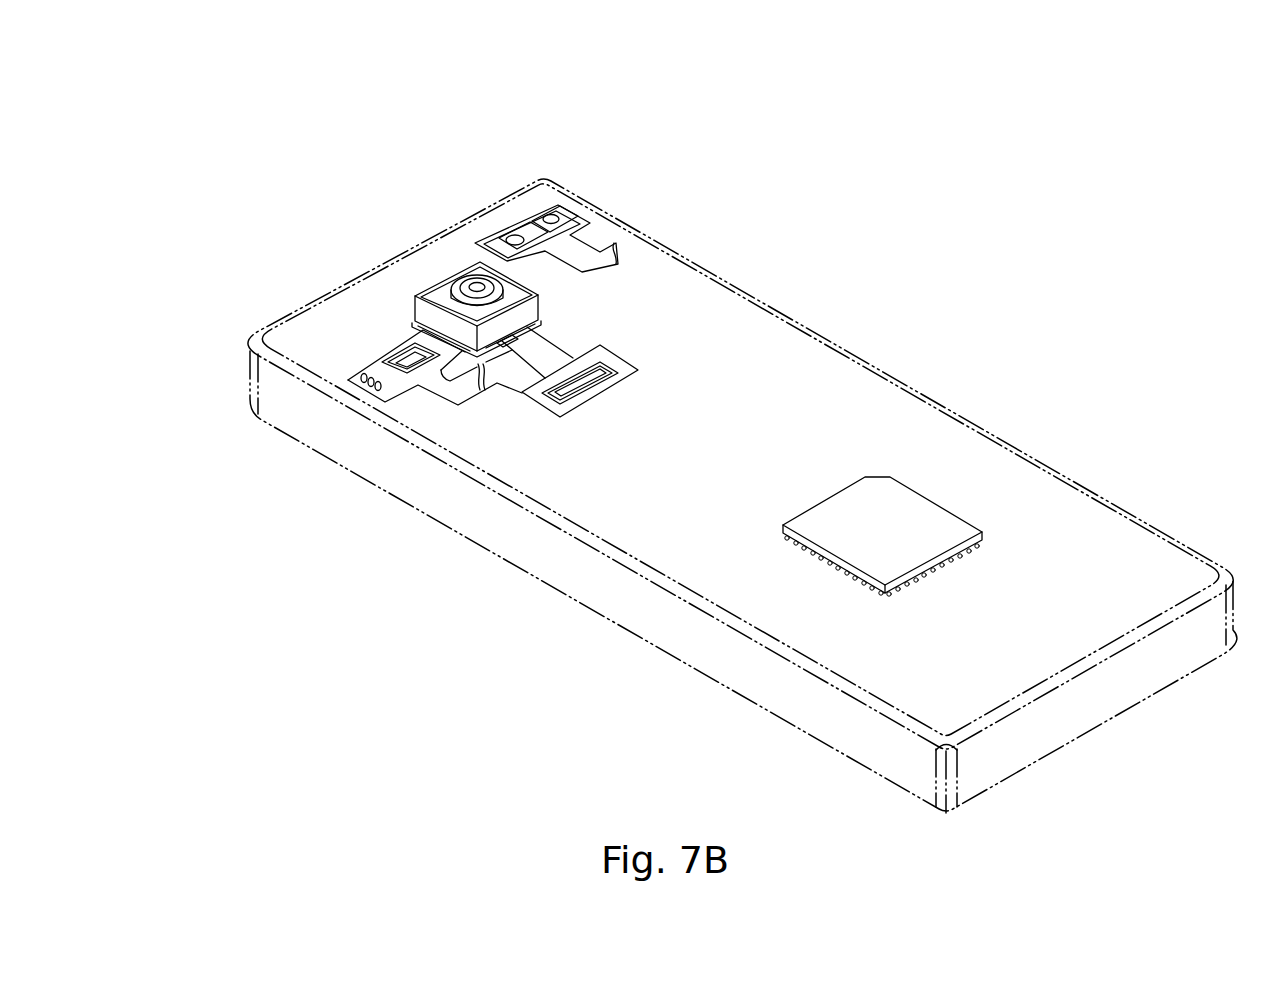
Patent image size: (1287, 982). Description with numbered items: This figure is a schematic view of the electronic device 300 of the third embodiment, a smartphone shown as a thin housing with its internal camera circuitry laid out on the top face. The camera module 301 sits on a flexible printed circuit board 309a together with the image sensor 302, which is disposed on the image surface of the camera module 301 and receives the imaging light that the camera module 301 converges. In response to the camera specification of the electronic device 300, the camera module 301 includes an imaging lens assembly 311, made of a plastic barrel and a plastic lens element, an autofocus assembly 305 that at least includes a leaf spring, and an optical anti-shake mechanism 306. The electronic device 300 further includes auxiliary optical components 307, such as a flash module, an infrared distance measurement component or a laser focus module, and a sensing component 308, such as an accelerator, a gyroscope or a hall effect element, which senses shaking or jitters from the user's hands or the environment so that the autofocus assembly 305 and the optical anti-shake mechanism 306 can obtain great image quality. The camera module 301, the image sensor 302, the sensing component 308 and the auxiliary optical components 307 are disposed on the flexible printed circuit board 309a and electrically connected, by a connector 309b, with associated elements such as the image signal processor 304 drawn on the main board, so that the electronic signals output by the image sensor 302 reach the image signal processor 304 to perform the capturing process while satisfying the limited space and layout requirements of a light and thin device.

The electronic device 300 is at (211, 71).
The camera module 301 is at (402, 224).
The image sensor 302 is at (420, 322).
The image signal processor 304 is at (920, 507).
The autofocus assembly 305 is at (447, 281).
The optical anti-shake mechanism 306 is at (470, 281).
The auxiliary optical component 307 is at (540, 208).
The sensing component 308 is at (528, 330).
The flexible printed circuit board 309a is at (438, 385).
The connector 309b is at (585, 400).
The imaging lens assembly 311 is at (477, 282).